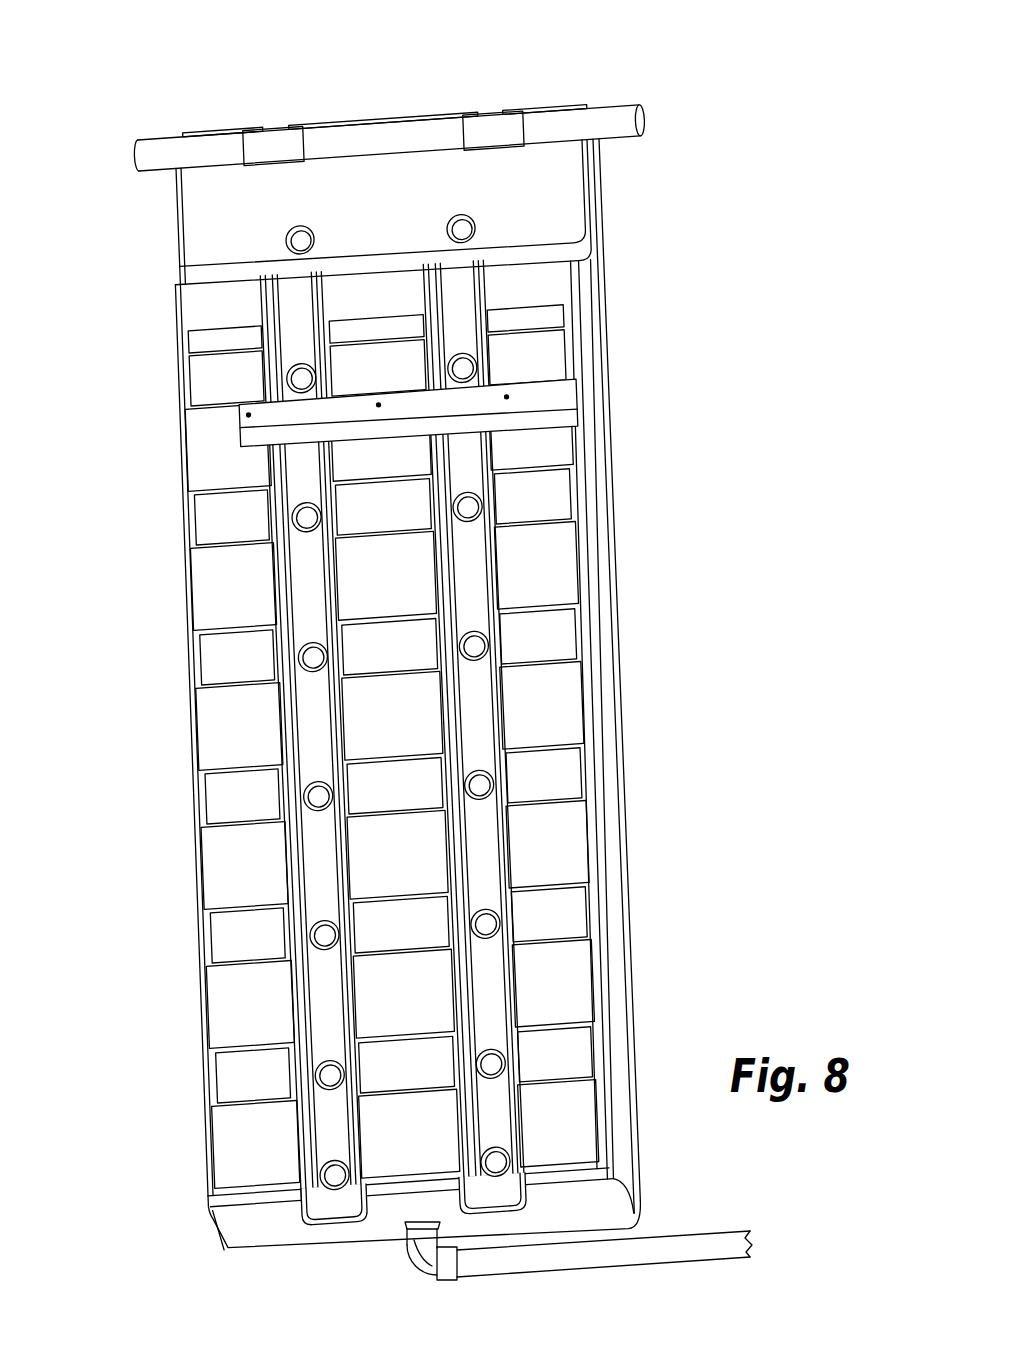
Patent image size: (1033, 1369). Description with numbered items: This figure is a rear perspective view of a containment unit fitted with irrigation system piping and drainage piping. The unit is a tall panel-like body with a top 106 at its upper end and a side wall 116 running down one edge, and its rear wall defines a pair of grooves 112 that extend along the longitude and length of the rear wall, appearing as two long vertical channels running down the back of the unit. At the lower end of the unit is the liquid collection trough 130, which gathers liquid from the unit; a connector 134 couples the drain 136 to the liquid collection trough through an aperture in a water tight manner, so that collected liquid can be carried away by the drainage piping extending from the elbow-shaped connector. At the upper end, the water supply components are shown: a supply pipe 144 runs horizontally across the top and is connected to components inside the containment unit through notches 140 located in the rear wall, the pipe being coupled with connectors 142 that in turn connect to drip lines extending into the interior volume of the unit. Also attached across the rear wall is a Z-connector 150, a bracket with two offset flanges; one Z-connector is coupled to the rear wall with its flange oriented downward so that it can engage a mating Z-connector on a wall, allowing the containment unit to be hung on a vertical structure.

The top 106 is at (555, 107).
The grooves 112 is at (470, 593).
The side wall 116 is at (600, 770).
The liquid collection trough 130 is at (240, 1172).
The connector 134 is at (425, 1262).
The drain 136 is at (641, 1250).
The notches 140 is at (280, 125).
The connectors 142 is at (275, 143).
The supply pipe 144 is at (148, 153).
The Z-connector 150 is at (475, 398).